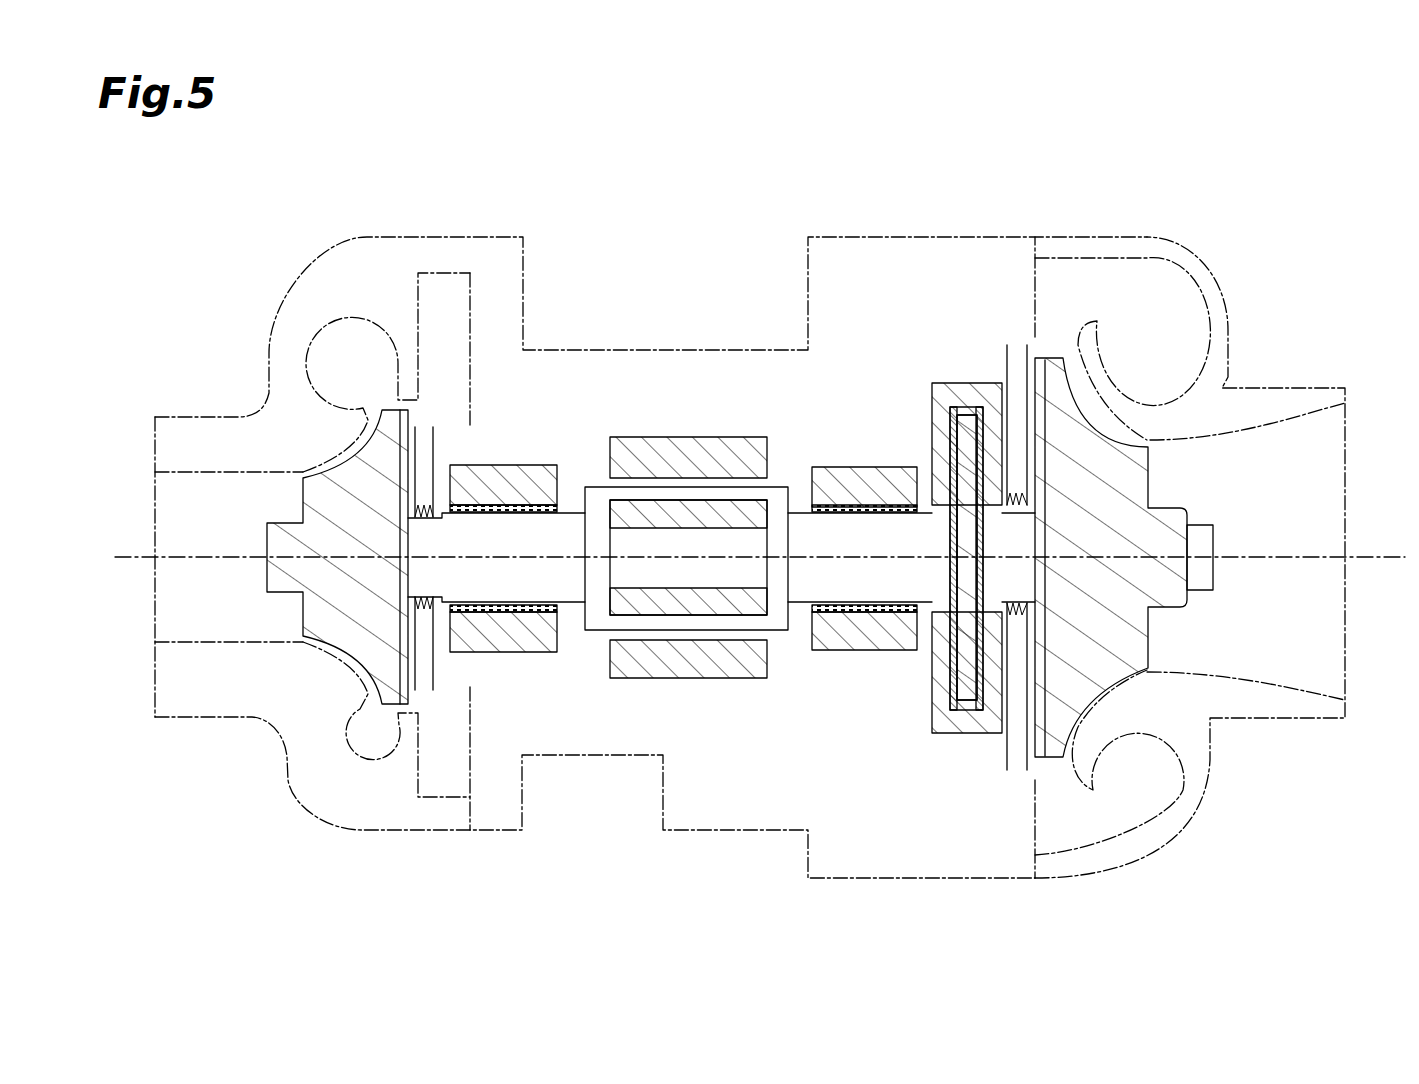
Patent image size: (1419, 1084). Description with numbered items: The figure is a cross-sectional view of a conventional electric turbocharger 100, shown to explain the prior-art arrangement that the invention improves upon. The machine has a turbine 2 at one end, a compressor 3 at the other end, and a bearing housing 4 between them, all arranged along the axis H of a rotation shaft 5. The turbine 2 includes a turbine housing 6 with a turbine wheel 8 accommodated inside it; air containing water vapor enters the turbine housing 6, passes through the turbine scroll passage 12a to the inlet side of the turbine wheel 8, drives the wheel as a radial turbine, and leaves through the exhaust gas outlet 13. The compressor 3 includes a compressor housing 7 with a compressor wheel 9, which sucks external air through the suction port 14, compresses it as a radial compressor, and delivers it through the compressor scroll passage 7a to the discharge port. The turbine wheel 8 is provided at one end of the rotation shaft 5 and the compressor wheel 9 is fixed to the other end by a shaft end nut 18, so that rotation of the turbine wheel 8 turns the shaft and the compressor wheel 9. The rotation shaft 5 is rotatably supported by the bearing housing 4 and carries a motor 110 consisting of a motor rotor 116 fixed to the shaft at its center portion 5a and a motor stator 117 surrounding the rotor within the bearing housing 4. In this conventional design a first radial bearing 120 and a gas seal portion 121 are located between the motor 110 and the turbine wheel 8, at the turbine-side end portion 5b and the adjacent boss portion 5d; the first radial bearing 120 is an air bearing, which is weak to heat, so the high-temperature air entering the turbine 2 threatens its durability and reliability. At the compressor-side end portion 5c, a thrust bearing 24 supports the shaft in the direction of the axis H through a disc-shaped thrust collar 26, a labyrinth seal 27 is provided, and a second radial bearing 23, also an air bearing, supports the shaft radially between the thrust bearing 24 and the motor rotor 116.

The conventional electric turbocharger 100 is at (328, 212).
The turbine 2 is at (272, 816).
The compressor 3 is at (1240, 834).
The bearing housing 4 is at (653, 350).
The rotation shaft 5 is at (798, 608).
The center portion 5a is at (803, 527).
The end portion 5b is at (443, 512).
The end portion 5c is at (942, 530).
The boss portion 5d is at (405, 628).
The turbine housing 6 is at (294, 280).
The compressor housing 7 is at (1230, 324).
The compressor scroll passage 7a is at (1135, 320).
The turbine wheel 8 is at (306, 628).
The compressor wheel 9 is at (1135, 652).
The turbine scroll passage 12a is at (357, 350).
The exhaust gas outlet 13 is at (196, 480).
The suction port 14 is at (1283, 425).
The shaft end nut 18 is at (1215, 580).
The second radial bearing 23 is at (881, 657).
The thrust bearing 24 is at (955, 735).
The thrust collar 26 is at (968, 705).
The labyrinth seal 27 is at (1018, 340).
The motor 110 is at (667, 655).
The motor rotor 116 is at (622, 608).
The motor stator 117 is at (641, 678).
The first radial bearing 120 is at (496, 655).
The gas seal portion 121 is at (425, 692).
The axis H is at (1375, 552).